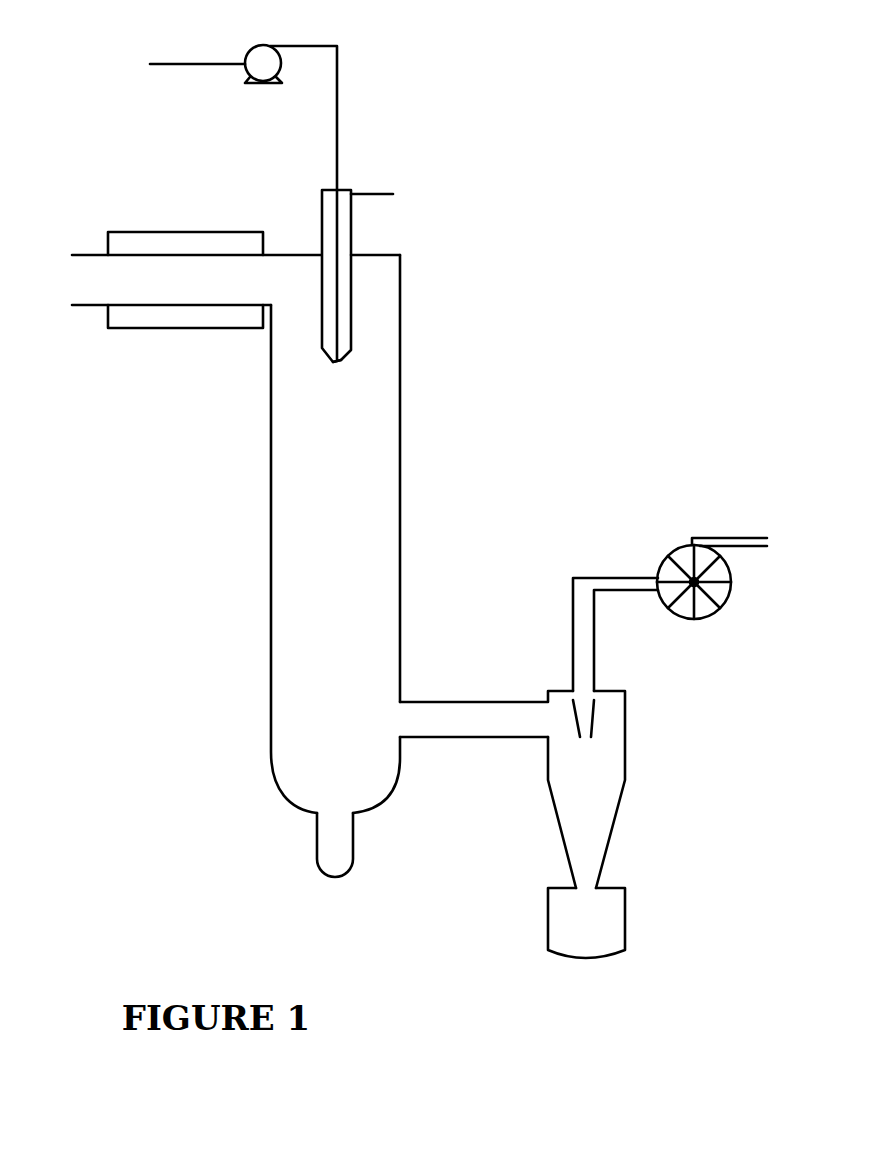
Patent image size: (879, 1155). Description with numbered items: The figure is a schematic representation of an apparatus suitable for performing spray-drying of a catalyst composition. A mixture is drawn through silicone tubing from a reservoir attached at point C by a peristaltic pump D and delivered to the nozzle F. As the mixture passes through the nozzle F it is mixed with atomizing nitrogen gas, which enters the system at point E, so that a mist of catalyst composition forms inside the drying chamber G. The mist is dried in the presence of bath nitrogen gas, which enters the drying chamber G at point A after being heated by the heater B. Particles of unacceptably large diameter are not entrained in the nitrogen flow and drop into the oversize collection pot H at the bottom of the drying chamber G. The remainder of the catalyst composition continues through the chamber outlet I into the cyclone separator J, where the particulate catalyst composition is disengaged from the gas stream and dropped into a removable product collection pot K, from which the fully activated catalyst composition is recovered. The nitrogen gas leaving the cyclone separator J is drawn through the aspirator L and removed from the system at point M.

The bath nitrogen gas entry point A is at (212, 280).
The heater B is at (185, 263).
The reservoir attachment point C is at (179, 66).
The peristaltic pump D is at (291, 97).
The atomizing nitrogen gas entry point E is at (365, 255).
The nozzle F is at (343, 358).
The drying chamber G is at (325, 584).
The oversize collection pot H is at (314, 845).
The chamber outlet I is at (486, 698).
The cyclone separator J is at (572, 798).
The removable product collection pot K is at (574, 936).
The aspirator L is at (652, 605).
The gas removal point M is at (750, 546).